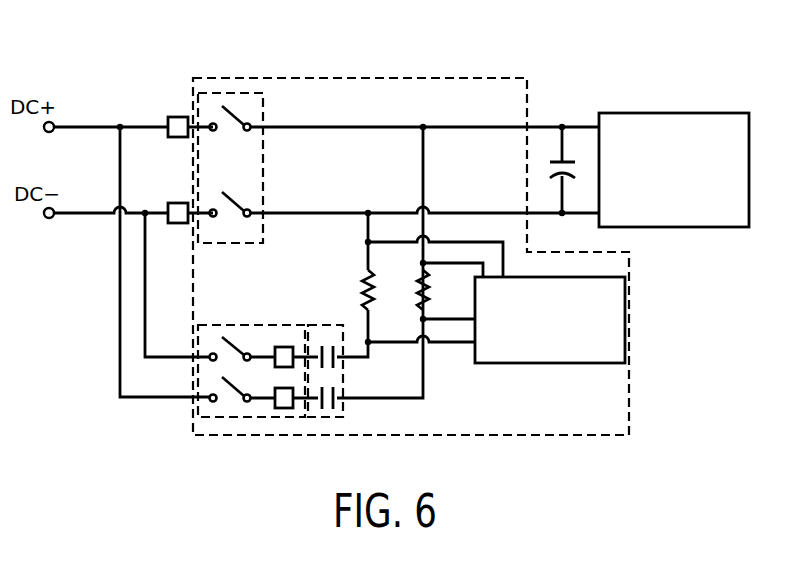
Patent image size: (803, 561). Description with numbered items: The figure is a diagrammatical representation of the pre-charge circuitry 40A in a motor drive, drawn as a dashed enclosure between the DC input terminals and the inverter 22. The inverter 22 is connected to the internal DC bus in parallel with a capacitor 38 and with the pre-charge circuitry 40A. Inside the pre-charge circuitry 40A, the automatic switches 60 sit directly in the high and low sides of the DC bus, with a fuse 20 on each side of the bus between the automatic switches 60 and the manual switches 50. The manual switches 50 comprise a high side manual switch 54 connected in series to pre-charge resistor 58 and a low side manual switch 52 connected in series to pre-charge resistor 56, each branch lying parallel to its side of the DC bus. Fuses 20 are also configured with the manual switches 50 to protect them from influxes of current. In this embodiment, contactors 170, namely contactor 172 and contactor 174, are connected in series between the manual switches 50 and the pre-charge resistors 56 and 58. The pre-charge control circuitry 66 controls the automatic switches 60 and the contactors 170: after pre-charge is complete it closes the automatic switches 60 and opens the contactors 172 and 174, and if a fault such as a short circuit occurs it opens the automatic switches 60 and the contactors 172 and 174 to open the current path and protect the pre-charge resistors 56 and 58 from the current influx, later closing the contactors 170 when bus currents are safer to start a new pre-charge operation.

The fuse 20 is at (176, 117).
The inverter 22 is at (668, 113).
The capacitor 38 is at (567, 162).
The pre-charge circuitry 40A is at (358, 78).
The manual switches 50 is at (198, 371).
The low side manual switch 52 is at (236, 343).
The high side manual switch 54 is at (233, 372).
The pre-charge resistor 56 is at (364, 286).
The pre-charge resistor 58 is at (419, 290).
The automatic switches 60 is at (263, 167).
The pre-charge control circuitry 66 is at (537, 333).
The contactors 170 is at (330, 326).
The contactor 172 is at (333, 365).
The contactor 174 is at (333, 402).